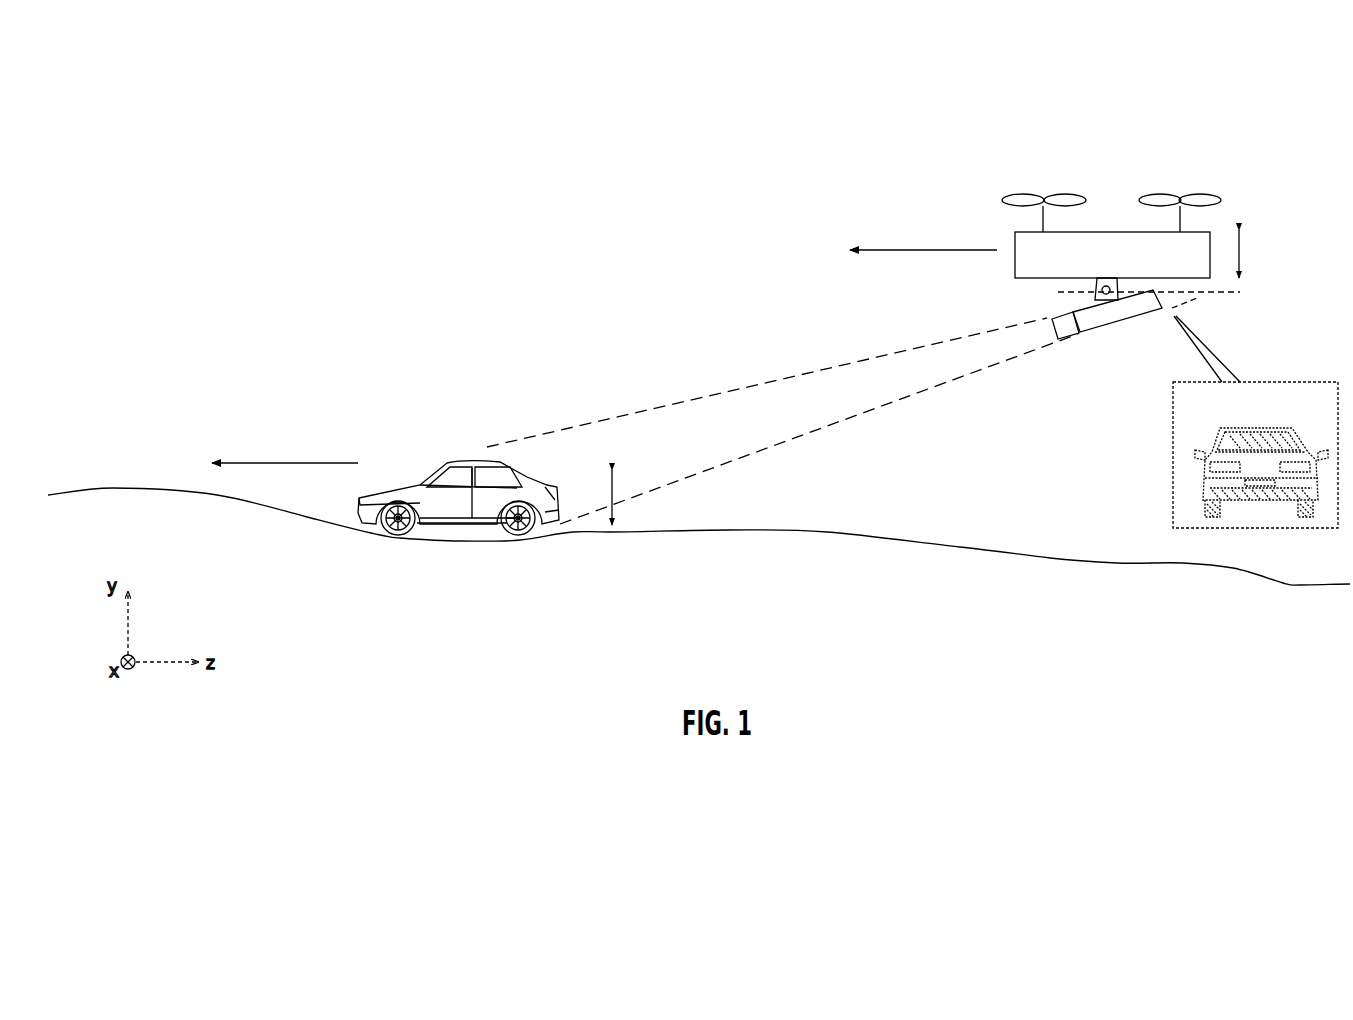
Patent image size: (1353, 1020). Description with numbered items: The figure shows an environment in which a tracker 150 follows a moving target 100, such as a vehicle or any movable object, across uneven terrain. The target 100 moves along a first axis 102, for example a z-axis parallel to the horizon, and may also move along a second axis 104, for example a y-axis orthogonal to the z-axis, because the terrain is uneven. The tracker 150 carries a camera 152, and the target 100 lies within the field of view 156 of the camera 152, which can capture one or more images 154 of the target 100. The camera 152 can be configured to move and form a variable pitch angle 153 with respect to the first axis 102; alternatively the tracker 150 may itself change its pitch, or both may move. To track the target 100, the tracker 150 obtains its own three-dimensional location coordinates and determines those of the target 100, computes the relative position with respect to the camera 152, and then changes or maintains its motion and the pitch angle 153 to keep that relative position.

The target 100 is at (458, 457).
The first axis 102 is at (327, 462).
The second axis 104 is at (613, 487).
The tracker 150 is at (1037, 180).
The camera 152 is at (1100, 327).
The pitch angle 153 is at (1203, 297).
The images 154 is at (1173, 512).
The field of view 156 is at (800, 375).